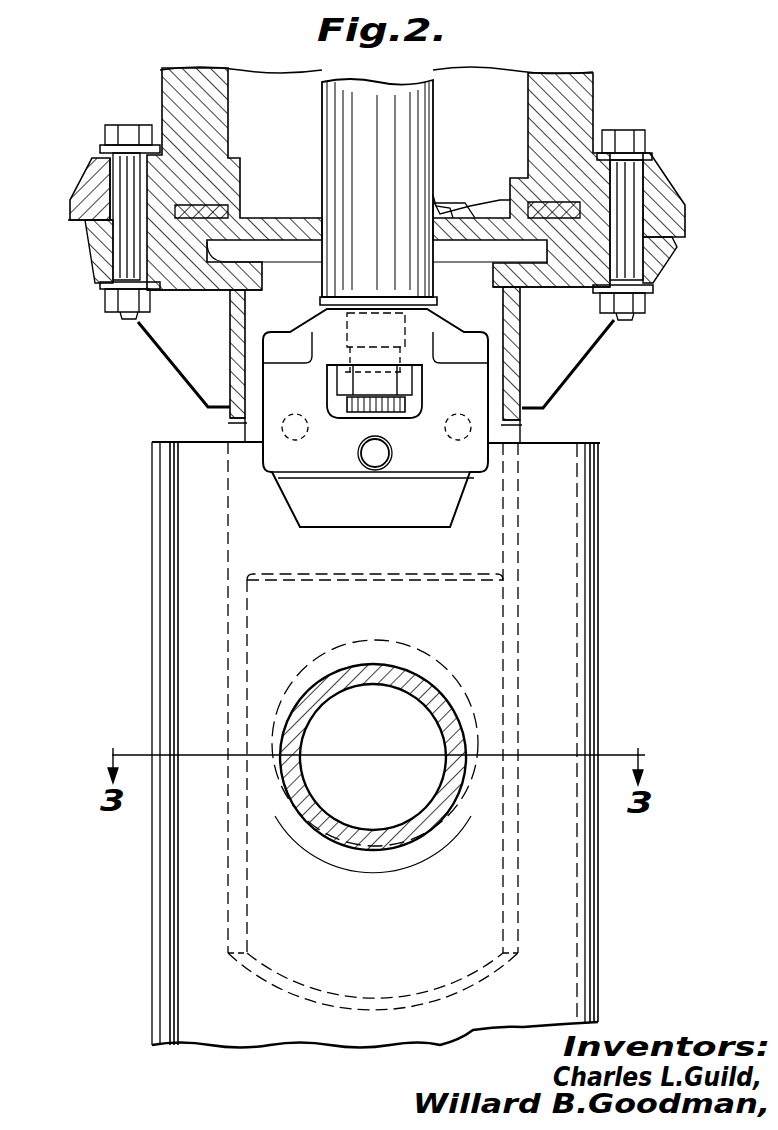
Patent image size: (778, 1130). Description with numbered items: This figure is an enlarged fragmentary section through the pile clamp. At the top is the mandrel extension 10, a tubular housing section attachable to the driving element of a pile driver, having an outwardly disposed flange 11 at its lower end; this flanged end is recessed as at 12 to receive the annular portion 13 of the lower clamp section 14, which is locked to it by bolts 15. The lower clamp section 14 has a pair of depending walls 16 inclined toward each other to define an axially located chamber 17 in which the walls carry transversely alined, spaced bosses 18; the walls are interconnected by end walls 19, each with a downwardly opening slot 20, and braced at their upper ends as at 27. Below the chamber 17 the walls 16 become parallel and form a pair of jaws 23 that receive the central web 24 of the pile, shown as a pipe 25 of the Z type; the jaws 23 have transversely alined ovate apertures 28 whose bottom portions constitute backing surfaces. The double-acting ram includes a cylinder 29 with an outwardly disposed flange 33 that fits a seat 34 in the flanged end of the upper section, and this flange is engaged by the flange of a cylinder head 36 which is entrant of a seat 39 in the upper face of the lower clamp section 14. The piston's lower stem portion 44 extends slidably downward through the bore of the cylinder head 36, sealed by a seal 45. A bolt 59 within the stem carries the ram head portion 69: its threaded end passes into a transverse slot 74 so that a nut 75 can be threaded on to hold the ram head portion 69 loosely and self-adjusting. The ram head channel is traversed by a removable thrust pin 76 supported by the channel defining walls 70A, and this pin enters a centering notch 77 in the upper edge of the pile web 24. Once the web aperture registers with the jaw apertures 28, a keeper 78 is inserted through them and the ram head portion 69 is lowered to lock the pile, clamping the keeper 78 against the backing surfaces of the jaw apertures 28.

The mandrel extension 10 is at (602, 104).
The flange 11 is at (662, 185).
The recess 12 is at (676, 254).
The annular portion 13 is at (76, 234).
The lower clamp section 14 is at (170, 293).
The bolts 15 is at (628, 178).
The depending walls 16 is at (495, 431).
The chamber 17 is at (500, 323).
The bosses 18 is at (293, 414).
The end walls 19 is at (242, 388).
The slot 20 is at (513, 435).
The jaws 23 is at (293, 890).
The central web 24 is at (540, 990).
The pipe 25 is at (327, 1049).
The braces 27 is at (170, 342).
The apertures 28 is at (410, 638).
The cylinder 29 is at (238, 92).
The flange 33 is at (560, 205).
The seat 34 is at (235, 214).
The cylinder head 36 is at (487, 205).
The seat 39 is at (208, 288).
The lower piston stem portion 44 is at (436, 120).
The seal 45 is at (440, 208).
The bolt 59 is at (375, 357).
The ram head portion 69 is at (278, 411).
The channel defining walls 70A is at (462, 460).
The transverse slot 74 is at (355, 407).
The nut 75 is at (375, 392).
The thrust pin 76 is at (380, 472).
The centering notch 77 is at (365, 468).
The keeper 78 is at (423, 673).